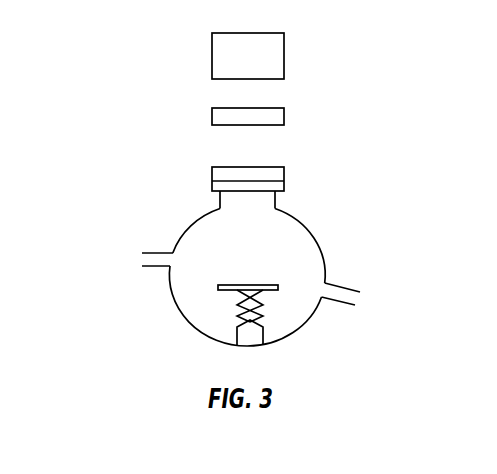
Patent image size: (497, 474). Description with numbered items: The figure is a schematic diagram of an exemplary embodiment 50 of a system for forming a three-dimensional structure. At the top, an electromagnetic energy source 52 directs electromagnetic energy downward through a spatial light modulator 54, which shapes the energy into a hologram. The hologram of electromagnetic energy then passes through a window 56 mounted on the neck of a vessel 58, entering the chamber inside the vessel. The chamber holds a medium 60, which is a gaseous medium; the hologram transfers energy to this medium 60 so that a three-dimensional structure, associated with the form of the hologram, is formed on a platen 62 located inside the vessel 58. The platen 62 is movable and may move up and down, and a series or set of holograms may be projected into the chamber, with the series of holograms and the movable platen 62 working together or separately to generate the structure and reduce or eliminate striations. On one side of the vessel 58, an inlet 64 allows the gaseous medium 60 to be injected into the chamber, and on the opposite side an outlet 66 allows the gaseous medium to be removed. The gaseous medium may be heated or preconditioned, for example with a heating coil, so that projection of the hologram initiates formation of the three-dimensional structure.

The exemplary embodiment 50 is at (122, 57).
The electromagnetic energy source 52 is at (284, 50).
The spatial light modulator 54 is at (284, 110).
The window 56 is at (284, 173).
The vessel 58 is at (316, 243).
The medium 60 is at (224, 259).
The platen 62 is at (235, 285).
The inlet 64 is at (138, 263).
The outlet 66 is at (358, 298).